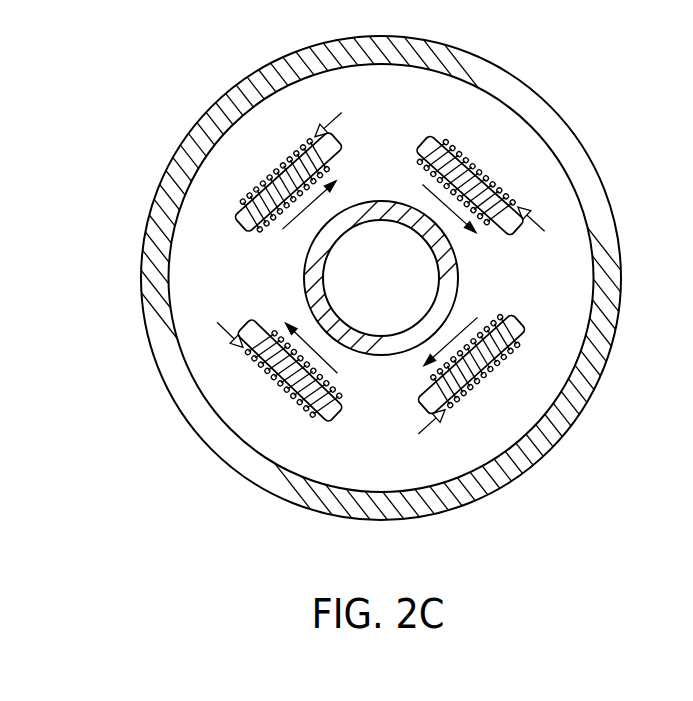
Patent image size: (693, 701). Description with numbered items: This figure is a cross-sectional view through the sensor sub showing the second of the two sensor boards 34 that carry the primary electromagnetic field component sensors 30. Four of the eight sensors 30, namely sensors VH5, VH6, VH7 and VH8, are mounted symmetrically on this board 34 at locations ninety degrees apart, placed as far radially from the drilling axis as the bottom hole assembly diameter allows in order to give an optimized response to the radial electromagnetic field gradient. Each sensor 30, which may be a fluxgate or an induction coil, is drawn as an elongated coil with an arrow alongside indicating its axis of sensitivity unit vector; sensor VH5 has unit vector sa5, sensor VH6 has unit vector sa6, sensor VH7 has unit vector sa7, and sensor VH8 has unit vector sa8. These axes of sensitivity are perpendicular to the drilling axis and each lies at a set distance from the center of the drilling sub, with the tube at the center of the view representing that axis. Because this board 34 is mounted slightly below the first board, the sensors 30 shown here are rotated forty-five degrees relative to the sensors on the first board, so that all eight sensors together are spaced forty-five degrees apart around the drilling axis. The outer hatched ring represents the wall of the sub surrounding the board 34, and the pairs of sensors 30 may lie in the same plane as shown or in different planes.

The electromagnetic field component sensor 30 is at (258, 162).
The board 34 is at (152, 222).
The sensor VH5 is at (546, 233).
The sensor VH6 is at (422, 439).
The sensor VH7 is at (216, 324).
The sensor VH8 is at (340, 114).
The axis of sensitivity unit vector sa5 is at (462, 222).
The axis of sensitivity unit vector sa6 is at (437, 360).
The axis of sensitivity unit vector sa7 is at (297, 333).
The axis of sensitivity unit vector sa8 is at (324, 193).